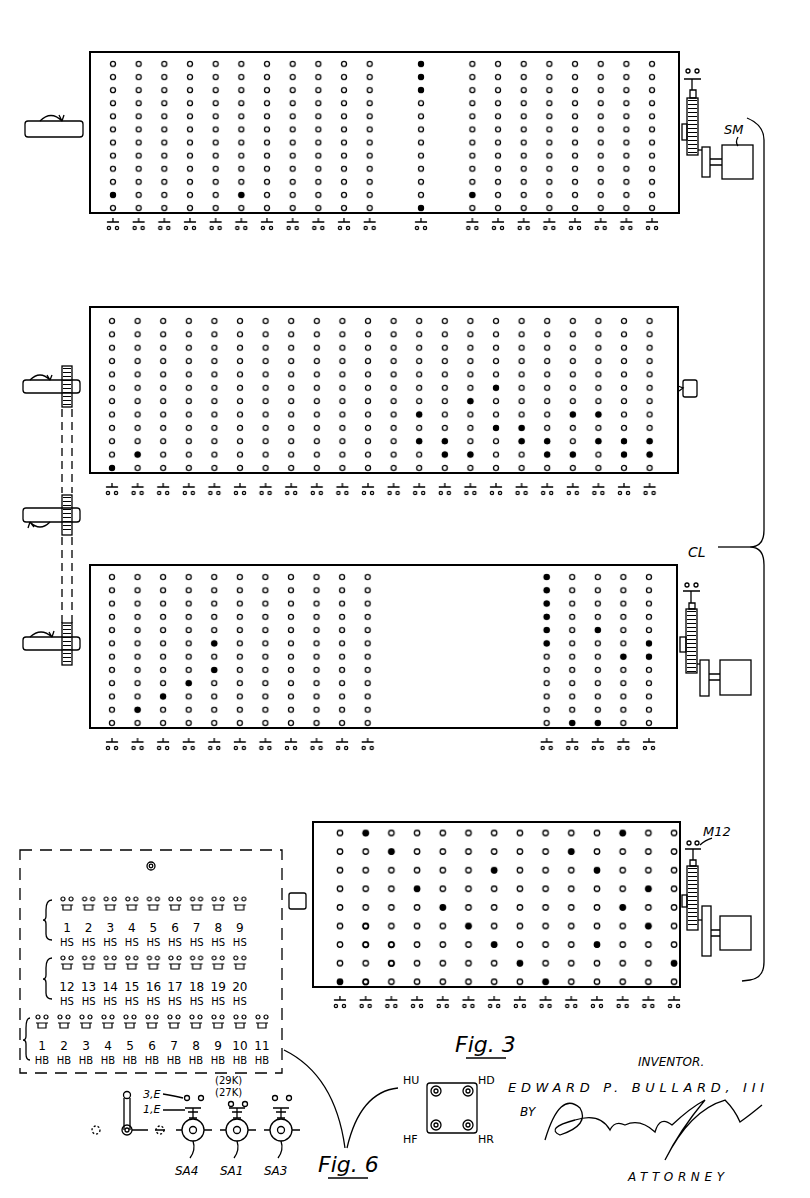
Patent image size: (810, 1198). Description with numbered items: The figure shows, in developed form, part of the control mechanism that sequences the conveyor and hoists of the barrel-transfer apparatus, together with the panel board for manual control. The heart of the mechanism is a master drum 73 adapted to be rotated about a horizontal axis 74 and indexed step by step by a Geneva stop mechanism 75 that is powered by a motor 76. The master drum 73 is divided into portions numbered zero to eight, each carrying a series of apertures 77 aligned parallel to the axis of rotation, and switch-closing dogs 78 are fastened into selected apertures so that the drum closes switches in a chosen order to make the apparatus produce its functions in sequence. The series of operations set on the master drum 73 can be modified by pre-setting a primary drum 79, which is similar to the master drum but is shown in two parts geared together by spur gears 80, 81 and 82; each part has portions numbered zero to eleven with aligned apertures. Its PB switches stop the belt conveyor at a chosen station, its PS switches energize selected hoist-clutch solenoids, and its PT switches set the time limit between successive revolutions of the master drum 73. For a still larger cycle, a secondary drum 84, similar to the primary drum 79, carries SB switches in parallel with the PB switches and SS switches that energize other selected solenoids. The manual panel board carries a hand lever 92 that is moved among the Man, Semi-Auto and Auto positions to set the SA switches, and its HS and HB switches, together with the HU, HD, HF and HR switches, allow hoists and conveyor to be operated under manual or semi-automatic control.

In FIG. 3, the secondary drum 84 is at (384, 66).
In FIG. 3, the primary drum 79 is at (380, 322).
In FIG. 3, the spur gear 82 is at (62, 398).
In FIG. 3, the spur gear 81 is at (62, 530).
In FIG. 3, the spur gear 80 is at (62, 660).
In FIG. 3, the master drum 73 is at (478, 831).
In FIG. 3, the horizontal axis 74 is at (299, 895).
In FIG. 3, the apertures 77 is at (377, 948).
In FIG. 3, the switch-closing dogs 78 is at (440, 912).
In FIG. 3, the Geneva stop mechanism 75 is at (711, 896).
In FIG. 3, the motor 76 is at (739, 950).
In FIG. 6, the hand lever 92 is at (122, 1112).